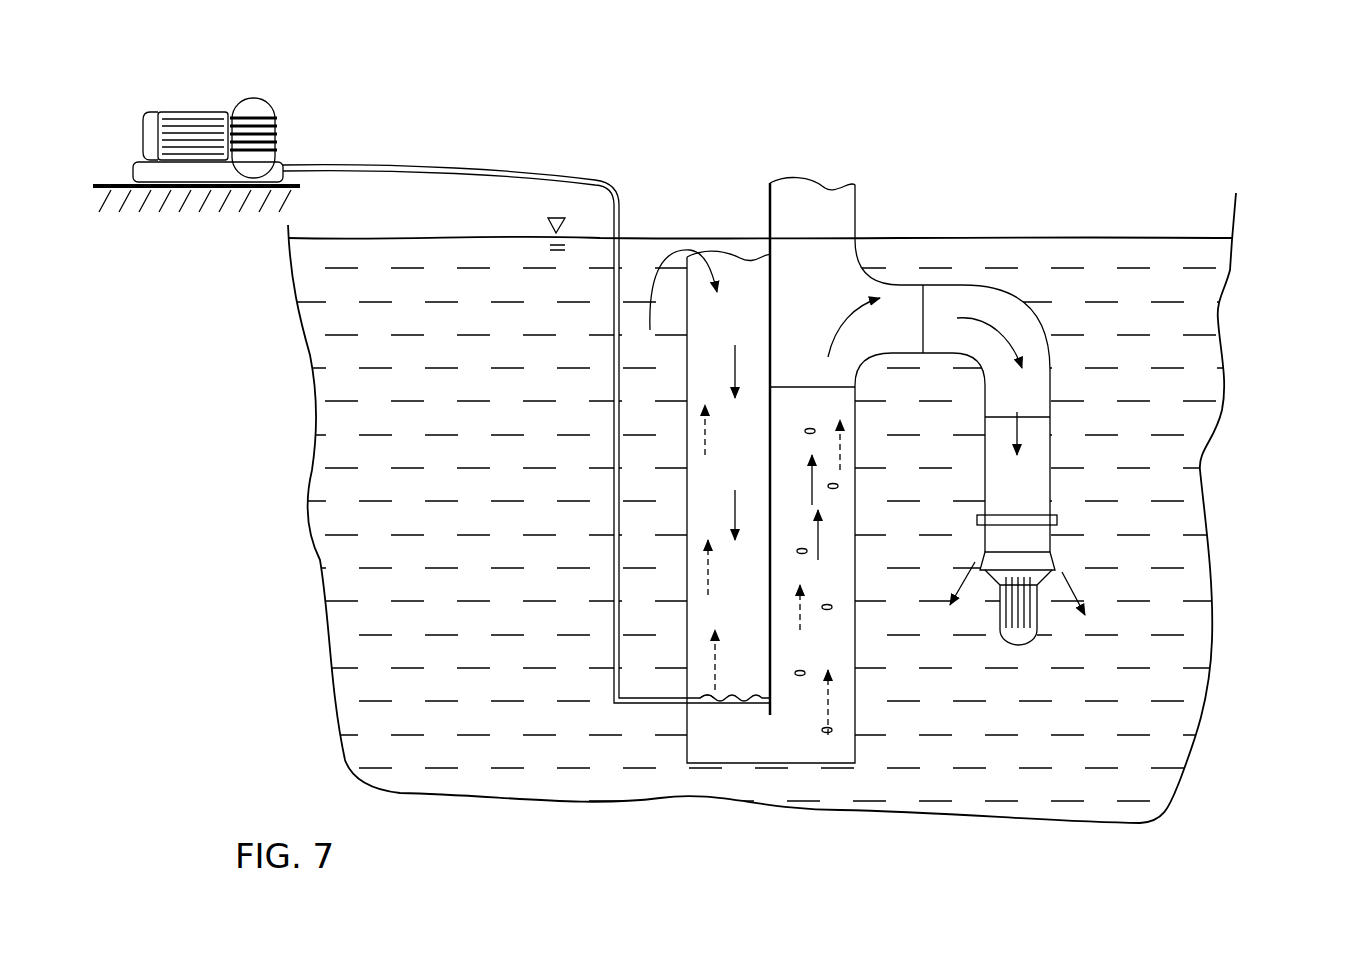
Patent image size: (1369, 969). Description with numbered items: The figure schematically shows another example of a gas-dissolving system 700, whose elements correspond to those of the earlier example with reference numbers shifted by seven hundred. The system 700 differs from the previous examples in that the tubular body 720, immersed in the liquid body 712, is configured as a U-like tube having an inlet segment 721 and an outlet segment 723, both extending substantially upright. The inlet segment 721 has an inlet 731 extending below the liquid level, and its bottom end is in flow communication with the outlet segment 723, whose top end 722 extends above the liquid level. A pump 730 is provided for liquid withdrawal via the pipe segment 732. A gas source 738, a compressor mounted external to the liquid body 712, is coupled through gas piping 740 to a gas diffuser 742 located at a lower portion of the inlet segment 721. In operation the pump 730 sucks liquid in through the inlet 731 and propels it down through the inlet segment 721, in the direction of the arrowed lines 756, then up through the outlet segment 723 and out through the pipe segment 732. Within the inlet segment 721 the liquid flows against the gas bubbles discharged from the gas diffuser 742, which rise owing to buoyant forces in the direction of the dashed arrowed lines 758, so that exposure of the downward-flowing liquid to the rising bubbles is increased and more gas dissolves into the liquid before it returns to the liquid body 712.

The system 700 is at (1196, 145).
The liquid body 712 is at (1180, 352).
The tubular body 720 is at (755, 198).
The inlet segment 721 is at (700, 437).
The top end 722 is at (808, 180).
The outlet segment 723 is at (845, 418).
The pump 730 is at (1025, 608).
The inlet 731 is at (745, 262).
The pipe segment 732 is at (988, 302).
The gas source 738 is at (181, 112).
The gas piping 740 is at (614, 515).
The gas diffuser 742 is at (700, 698).
The arrowed lines 756 is at (733, 374).
The dashed arrowed lines 758 is at (707, 564).